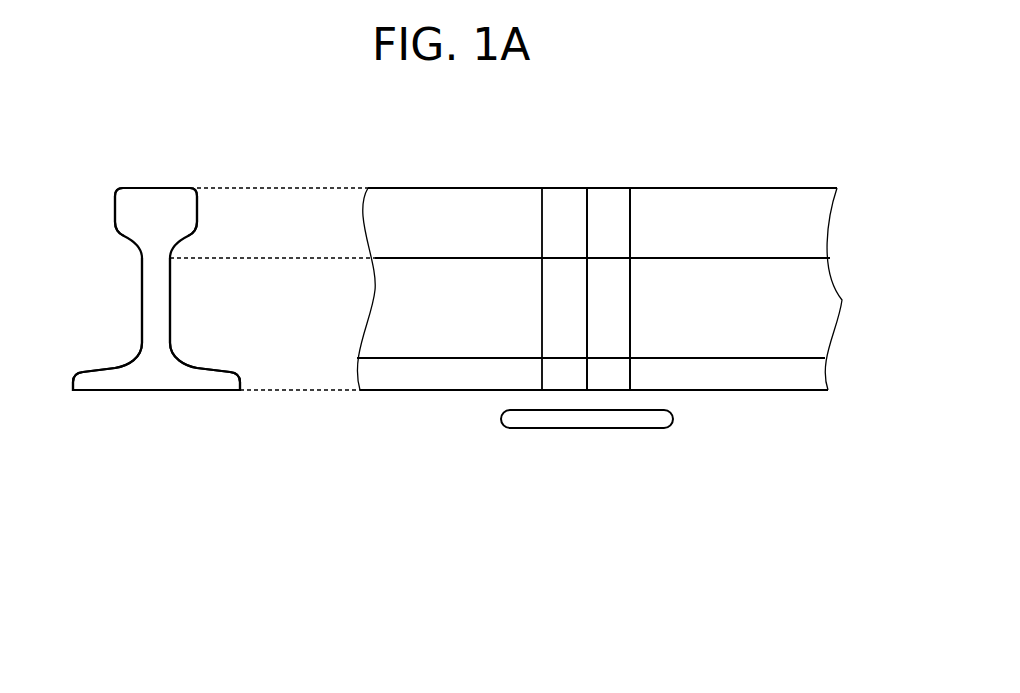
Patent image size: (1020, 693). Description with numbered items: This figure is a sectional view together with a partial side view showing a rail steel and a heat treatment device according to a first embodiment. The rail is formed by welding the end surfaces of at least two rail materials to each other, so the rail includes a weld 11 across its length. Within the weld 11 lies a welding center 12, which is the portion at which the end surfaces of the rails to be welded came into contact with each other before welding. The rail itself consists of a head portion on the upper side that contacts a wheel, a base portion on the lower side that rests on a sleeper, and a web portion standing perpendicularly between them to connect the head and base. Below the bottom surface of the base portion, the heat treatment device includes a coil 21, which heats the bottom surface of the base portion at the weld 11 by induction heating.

The weld 11 is at (604, 174).
The welding center 12 is at (588, 225).
The coil 21 is at (675, 417).